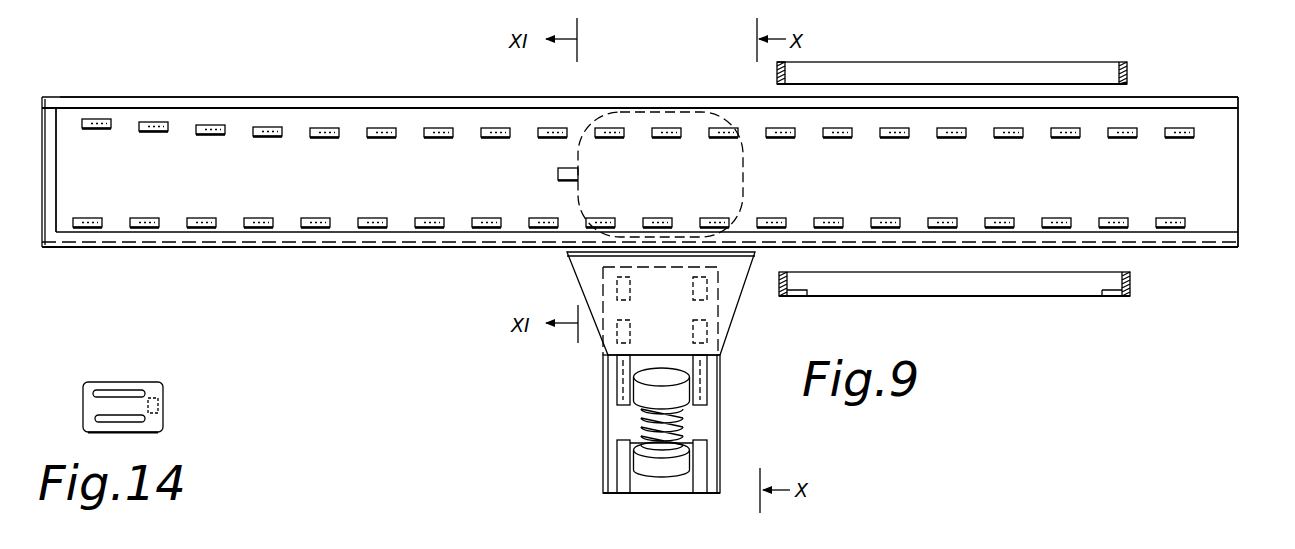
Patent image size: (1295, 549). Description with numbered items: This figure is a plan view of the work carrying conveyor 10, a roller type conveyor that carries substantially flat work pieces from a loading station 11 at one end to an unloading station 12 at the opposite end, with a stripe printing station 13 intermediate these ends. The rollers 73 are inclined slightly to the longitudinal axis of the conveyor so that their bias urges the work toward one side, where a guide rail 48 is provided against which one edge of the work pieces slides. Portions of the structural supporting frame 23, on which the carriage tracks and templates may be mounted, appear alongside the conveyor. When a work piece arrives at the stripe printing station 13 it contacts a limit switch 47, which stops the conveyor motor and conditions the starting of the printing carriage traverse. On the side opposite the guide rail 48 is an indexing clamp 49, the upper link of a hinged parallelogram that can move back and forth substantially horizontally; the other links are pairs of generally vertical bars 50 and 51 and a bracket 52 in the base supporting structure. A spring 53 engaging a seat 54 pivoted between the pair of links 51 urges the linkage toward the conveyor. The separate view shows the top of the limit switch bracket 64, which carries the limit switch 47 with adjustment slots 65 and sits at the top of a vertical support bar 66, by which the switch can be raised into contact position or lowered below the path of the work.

In FIG. 9, the work carrying conveyor 10 is at (886, 115).
In FIG. 9, the loading station 11 is at (1215, 184).
In FIG. 9, the unloading station 12 is at (157, 187).
In FIG. 9, the stripe printing station 13 is at (672, 190).
In FIG. 9, the structural supporting frame 23 is at (1015, 63).
In FIG. 9, the limit switch 47 is at (558, 174).
In FIG. 9, the guide rail 48 is at (628, 103).
In FIG. 9, the indexing clamp 49 is at (577, 275).
In FIG. 9, the vertical bars 50 is at (705, 294).
In FIG. 9, the vertical bars 51 is at (704, 371).
In FIG. 9, the bracket 52 is at (607, 428).
In FIG. 9, the spring 53 is at (683, 432).
In FIG. 9, the seat 54 is at (690, 399).
In FIG. 9, the rollers 73 is at (381, 139).
In FIG. 14, the limit switch bracket 64 is at (83, 409).
In FIG. 14, the adjustment slots 65 is at (118, 418).
In FIG. 14, the vertical support bar 66 is at (160, 405).